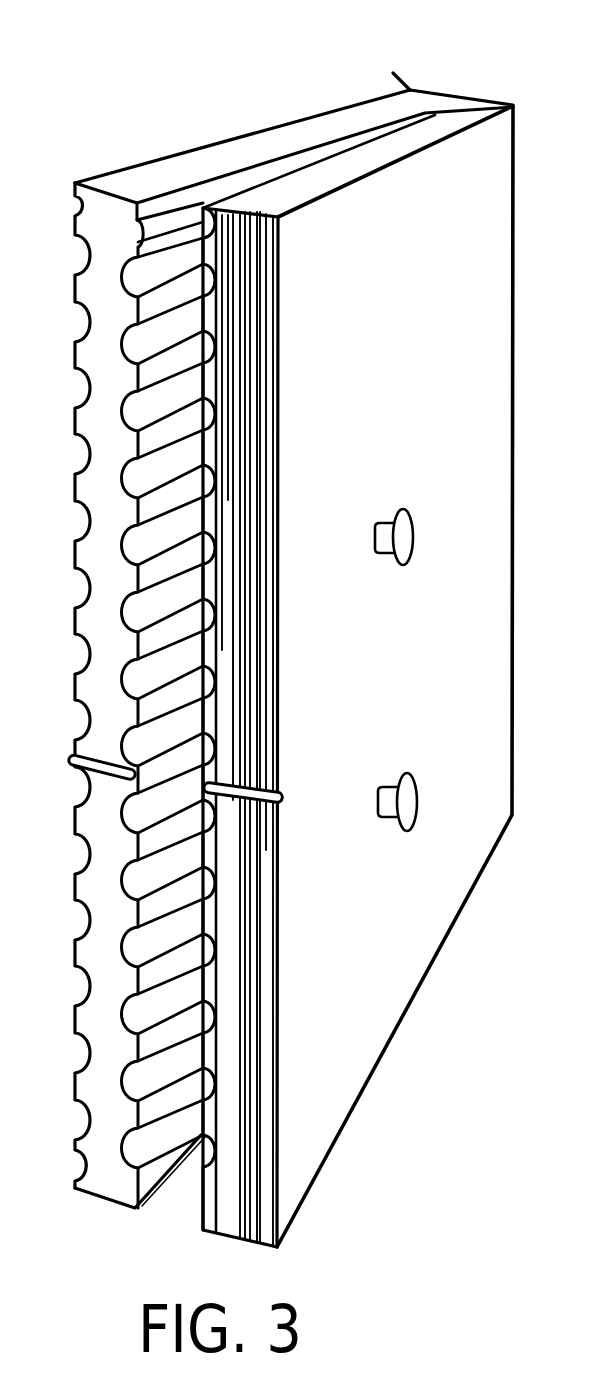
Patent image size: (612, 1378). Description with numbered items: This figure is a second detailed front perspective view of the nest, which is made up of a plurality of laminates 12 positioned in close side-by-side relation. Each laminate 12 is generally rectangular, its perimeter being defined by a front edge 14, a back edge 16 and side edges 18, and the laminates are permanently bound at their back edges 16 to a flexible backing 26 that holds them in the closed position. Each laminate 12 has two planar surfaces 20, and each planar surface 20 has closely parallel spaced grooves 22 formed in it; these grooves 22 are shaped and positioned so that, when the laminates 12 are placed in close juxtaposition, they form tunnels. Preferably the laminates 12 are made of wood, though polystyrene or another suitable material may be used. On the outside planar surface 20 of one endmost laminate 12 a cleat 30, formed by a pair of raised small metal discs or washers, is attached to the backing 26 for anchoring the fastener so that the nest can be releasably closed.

The laminate 12 is at (228, 1218).
The front edge 14 is at (160, 1080).
The back edge 16 is at (473, 100).
The side edge 18 is at (322, 173).
The planar surface 20 is at (166, 628).
The groove 22 is at (90, 668).
The flexible backing 26 is at (515, 91).
The cleat 30 is at (413, 800).